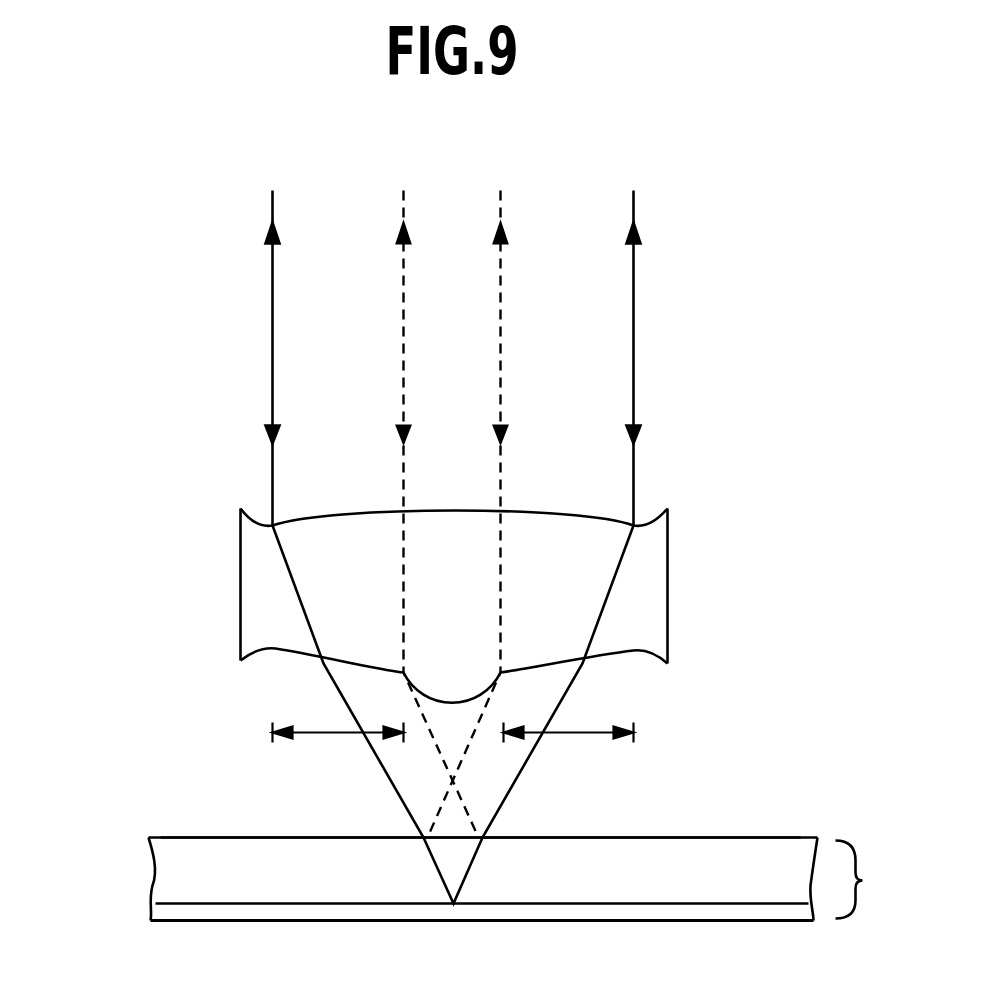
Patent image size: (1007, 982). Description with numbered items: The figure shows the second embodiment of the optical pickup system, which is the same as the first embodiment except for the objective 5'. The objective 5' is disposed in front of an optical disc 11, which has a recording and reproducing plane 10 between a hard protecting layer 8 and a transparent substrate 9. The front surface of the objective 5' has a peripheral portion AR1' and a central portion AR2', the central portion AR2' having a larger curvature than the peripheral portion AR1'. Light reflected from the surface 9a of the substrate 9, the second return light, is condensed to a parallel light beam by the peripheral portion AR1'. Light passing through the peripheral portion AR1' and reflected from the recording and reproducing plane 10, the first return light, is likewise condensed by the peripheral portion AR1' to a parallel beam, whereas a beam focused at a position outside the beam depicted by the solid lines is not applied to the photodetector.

The objective 5' is at (415, 606).
The surface of the substrate 9a is at (183, 837).
The transparent substrate 9 is at (157, 858).
The recording and reproducing plane 10 is at (180, 902).
The hard protecting layer 8 is at (173, 921).
The optical disc 11 is at (874, 880).
The peripheral portion AR1' is at (493, 768).
The central portion AR2' is at (511, 514).